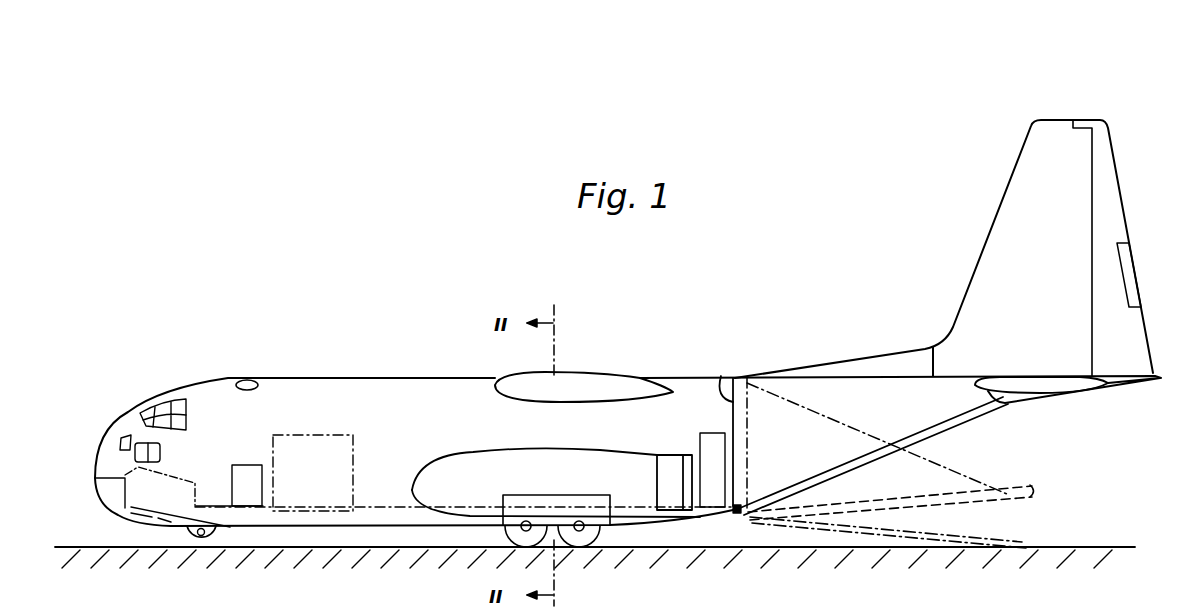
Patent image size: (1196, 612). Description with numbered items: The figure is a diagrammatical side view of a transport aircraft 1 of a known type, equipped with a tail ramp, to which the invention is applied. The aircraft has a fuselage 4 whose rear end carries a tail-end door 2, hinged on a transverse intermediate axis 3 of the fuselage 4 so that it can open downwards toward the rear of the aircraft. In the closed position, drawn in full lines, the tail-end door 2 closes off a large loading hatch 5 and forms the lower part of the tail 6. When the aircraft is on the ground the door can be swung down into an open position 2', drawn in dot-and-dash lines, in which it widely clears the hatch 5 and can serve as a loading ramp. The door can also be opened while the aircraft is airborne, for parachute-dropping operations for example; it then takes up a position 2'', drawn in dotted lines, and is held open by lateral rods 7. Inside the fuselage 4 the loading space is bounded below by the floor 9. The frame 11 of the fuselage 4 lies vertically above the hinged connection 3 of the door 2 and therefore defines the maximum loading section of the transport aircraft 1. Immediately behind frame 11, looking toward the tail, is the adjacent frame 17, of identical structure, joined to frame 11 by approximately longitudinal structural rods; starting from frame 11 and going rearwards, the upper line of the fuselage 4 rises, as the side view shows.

The transport aircraft 1 is at (311, 364).
The tail-end door 2 is at (877, 449).
The open position of the tail-end door 2' is at (913, 528).
The in-flight open position of the tail-end door 2'' is at (908, 488).
The transverse intermediate axis 3 is at (741, 514).
The fuselage 4 is at (386, 378).
The loading hatch 5 is at (863, 455).
The tail 6 is at (898, 403).
The lateral rods 7 is at (942, 465).
The floor 9 is at (396, 512).
The frame 11 is at (721, 376).
The frame 17 is at (750, 463).